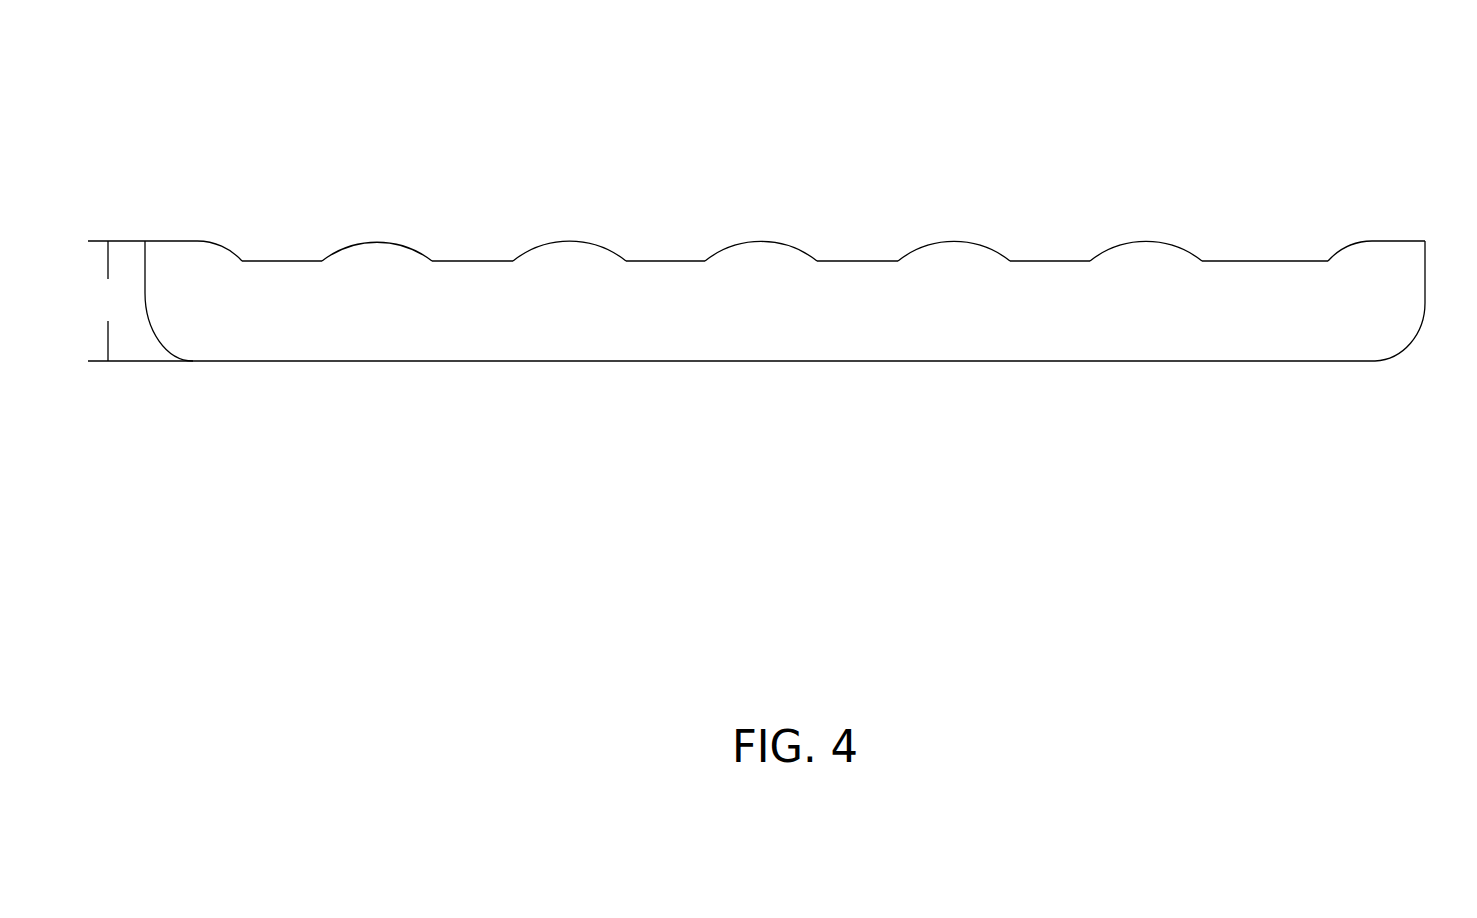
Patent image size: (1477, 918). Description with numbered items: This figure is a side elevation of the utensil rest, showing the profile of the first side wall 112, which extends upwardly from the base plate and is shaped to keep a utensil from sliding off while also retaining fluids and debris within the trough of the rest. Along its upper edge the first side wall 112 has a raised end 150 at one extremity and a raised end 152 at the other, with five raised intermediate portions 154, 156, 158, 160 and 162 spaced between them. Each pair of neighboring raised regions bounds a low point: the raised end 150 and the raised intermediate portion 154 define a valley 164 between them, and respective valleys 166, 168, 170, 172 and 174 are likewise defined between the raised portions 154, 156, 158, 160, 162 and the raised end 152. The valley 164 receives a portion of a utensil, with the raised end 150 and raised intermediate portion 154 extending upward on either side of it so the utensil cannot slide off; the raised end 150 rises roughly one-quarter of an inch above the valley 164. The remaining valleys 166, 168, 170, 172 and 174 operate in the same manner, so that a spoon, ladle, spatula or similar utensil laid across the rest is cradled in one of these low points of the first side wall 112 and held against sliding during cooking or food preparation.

The first side wall 112 is at (705, 109).
The raised end 150 is at (182, 246).
The raised end 152 is at (1387, 246).
The raised intermediate portion 154 is at (380, 246).
The raised intermediate portion 156 is at (572, 246).
The raised intermediate portion 158 is at (763, 246).
The raised intermediate portion 160 is at (954, 246).
The raised intermediate portion 162 is at (1147, 246).
The valley 164 is at (282, 262).
The valley 166 is at (474, 262).
The valley 168 is at (667, 262).
The valley 170 is at (857, 262).
The valley 172 is at (1052, 262).
The valley 174 is at (1267, 262).